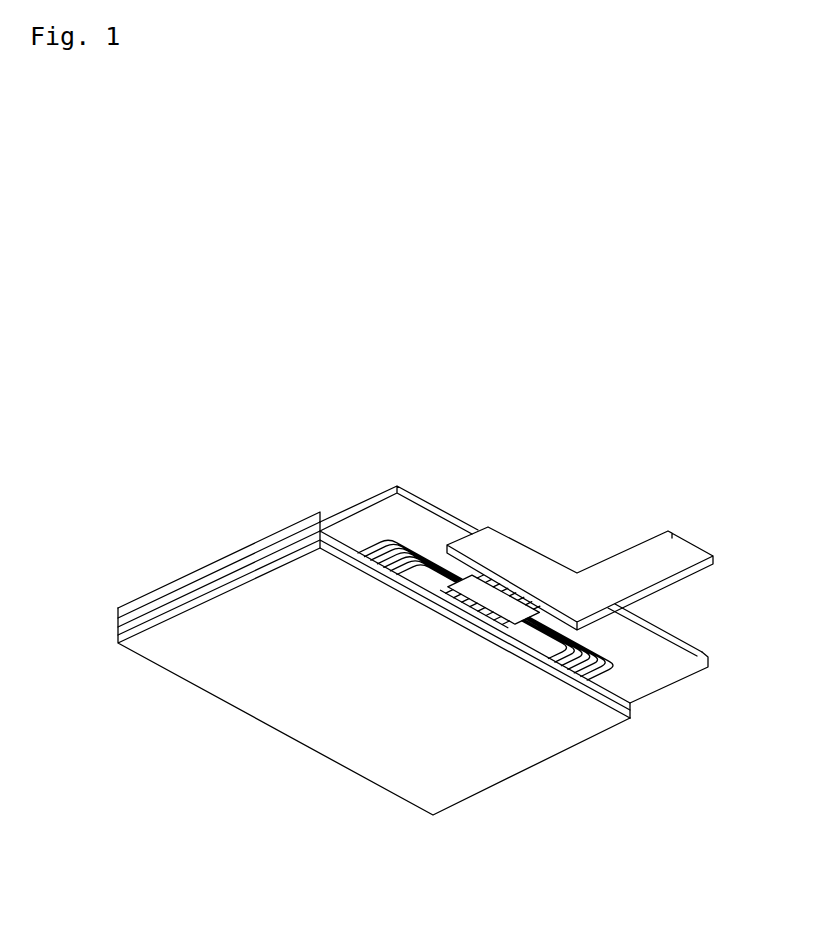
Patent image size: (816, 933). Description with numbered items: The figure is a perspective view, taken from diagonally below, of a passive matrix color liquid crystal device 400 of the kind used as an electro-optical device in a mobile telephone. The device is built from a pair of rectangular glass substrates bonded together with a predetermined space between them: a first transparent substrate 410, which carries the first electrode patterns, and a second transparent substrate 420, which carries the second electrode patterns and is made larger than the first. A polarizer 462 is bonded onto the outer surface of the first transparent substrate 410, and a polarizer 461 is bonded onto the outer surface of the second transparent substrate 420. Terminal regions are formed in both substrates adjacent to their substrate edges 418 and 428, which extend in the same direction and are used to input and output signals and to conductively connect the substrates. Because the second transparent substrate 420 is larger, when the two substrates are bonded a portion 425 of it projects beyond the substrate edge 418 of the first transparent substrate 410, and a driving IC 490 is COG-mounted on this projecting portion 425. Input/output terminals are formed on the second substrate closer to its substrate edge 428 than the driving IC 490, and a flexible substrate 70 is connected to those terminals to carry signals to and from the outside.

The liquid crystal device 400 is at (308, 776).
The first transparent substrate 410 is at (142, 605).
The substrate edge 418 is at (632, 713).
The second transparent substrate 420 is at (172, 603).
The projecting portion 425 is at (375, 480).
The substrate edge 428 is at (702, 652).
The polarizer 461 is at (247, 547).
The polarizer 462 is at (253, 695).
The driving IC 490 is at (493, 605).
The flexible substrate 70 is at (642, 598).